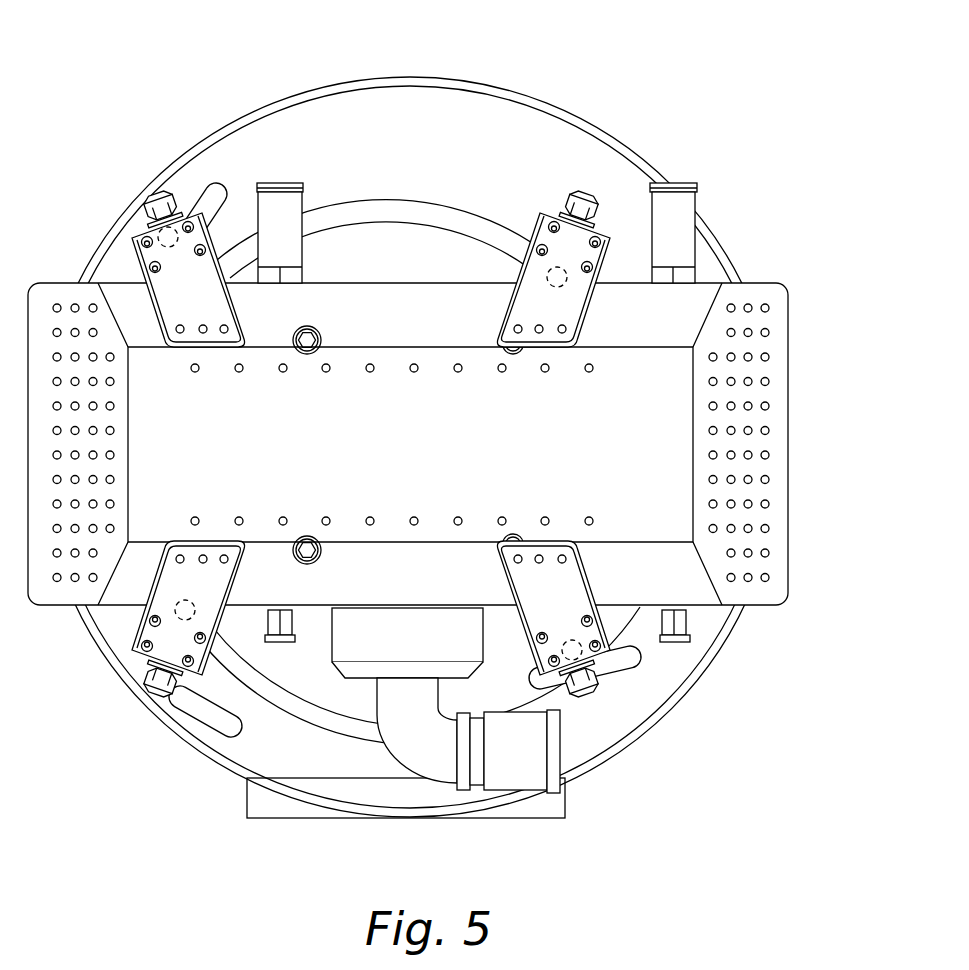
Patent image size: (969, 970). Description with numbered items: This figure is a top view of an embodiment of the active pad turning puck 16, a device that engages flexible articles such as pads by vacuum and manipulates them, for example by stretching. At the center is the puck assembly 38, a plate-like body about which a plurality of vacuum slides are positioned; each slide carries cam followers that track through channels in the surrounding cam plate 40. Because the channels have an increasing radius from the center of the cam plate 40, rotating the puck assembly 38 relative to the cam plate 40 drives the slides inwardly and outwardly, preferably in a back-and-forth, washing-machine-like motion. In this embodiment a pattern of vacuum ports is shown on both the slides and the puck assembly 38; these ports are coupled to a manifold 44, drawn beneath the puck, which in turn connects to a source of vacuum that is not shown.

The active pad turning puck 16 is at (493, 108).
The cam plate 40 is at (365, 133).
The puck assembly 38 is at (697, 303).
The manifold 44 is at (408, 752).